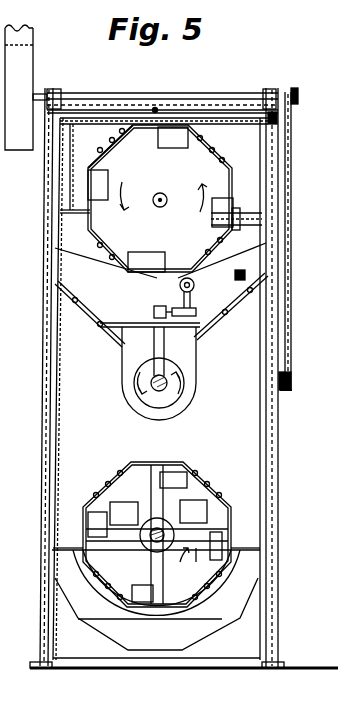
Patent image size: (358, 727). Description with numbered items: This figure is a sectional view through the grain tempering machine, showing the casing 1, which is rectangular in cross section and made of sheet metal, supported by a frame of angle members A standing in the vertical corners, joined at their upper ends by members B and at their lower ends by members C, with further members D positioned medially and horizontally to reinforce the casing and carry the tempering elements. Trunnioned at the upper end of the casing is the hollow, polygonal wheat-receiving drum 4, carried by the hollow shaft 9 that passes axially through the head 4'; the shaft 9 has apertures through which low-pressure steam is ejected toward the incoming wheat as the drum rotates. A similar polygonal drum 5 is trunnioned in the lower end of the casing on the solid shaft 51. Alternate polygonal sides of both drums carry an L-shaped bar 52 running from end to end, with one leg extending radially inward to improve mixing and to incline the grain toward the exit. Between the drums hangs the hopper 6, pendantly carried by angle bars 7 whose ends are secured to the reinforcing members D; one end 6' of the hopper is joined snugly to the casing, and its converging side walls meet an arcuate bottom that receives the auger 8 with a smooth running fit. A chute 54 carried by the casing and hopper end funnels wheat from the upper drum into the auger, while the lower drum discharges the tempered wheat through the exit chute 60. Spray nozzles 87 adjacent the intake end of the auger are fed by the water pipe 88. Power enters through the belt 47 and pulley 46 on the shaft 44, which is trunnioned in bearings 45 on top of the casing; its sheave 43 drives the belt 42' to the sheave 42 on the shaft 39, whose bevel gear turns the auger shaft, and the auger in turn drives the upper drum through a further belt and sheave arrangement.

The casing 1 is at (44, 337).
The drum 4 is at (169, 198).
The head 4' is at (103, 146).
The drum 5 is at (205, 482).
The hopper 6 is at (169, 341).
The hopper end 6' is at (172, 355).
The angle bars 7 is at (68, 330).
The auger 8 is at (170, 403).
The hollow shaft 9 is at (159, 194).
The shaft 39 is at (292, 376).
The sheave 42 is at (302, 391).
The belt 42' is at (308, 241).
The sheave 43 is at (295, 96).
The shaft 44 is at (146, 93).
The bearings 45 is at (60, 98).
The pulley 46 is at (14, 62).
The belt 47 is at (26, 37).
The solid shaft 51 is at (154, 540).
The L-shaped bar 52 is at (152, 258).
The chute 54 is at (250, 277).
The chute 60 is at (156, 604).
The spray nozzles 87 is at (160, 305).
The water pipe 88 is at (195, 288).
The angle members A is at (52, 368).
The upper frame members B is at (267, 126).
The lower frame members C is at (67, 664).
The reinforcing members D is at (82, 114).